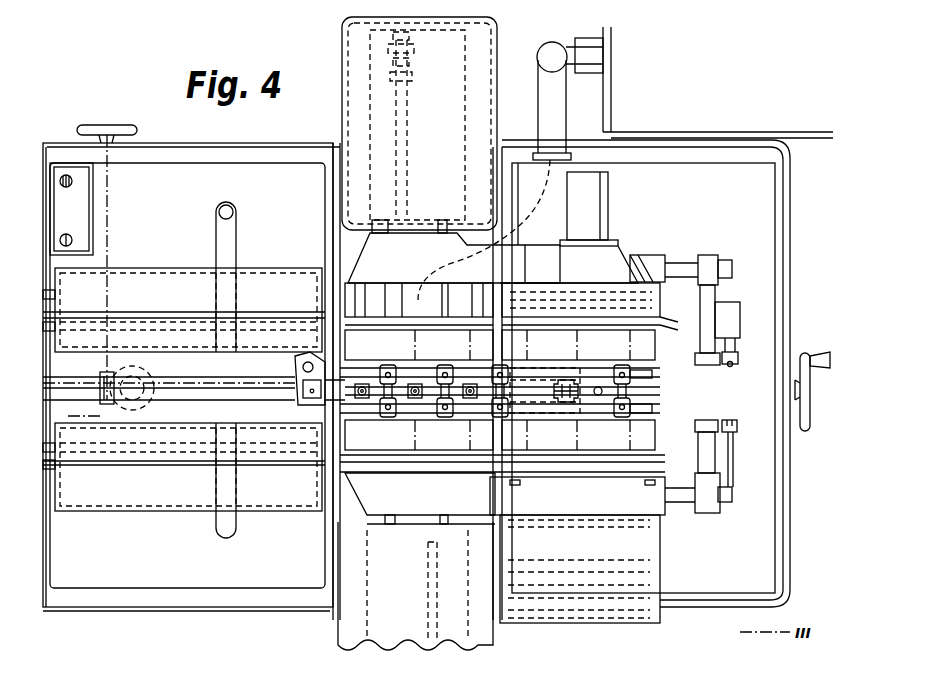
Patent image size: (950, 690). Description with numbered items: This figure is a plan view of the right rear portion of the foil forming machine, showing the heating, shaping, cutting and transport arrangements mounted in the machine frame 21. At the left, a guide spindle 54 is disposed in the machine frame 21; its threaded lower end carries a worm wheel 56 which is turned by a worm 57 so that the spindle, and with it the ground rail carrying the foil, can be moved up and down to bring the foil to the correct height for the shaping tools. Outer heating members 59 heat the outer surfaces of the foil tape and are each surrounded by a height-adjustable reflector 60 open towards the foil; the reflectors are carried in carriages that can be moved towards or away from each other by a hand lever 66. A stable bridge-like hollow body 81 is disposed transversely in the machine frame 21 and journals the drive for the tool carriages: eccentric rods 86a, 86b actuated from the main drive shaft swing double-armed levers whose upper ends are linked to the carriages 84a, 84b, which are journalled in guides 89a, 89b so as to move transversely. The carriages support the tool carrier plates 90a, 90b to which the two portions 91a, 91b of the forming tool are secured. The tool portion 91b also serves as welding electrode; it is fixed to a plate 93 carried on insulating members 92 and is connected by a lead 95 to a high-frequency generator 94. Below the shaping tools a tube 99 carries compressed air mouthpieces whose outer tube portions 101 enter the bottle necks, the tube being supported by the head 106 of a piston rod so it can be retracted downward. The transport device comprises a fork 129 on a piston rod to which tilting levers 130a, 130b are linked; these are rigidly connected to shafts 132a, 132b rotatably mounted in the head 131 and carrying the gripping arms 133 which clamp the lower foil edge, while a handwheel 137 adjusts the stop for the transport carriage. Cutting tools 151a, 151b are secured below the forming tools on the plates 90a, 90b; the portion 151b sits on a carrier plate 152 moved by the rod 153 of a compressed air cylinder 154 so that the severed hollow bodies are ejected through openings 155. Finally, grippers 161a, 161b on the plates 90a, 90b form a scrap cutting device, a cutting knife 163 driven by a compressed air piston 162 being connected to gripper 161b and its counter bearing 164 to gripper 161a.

The machine frame 21 is at (288, 172).
The guide spindle 54 is at (150, 380).
The worm wheel 56 is at (146, 400).
The worm 57 is at (108, 377).
The heating members 59 is at (137, 312).
The reflector 60 is at (143, 283).
The hand lever 66 is at (234, 233).
The bridge-like hollow body 81 is at (342, 516).
The tool supporting carriage 84a is at (410, 520).
The tool supporting carriage 84b is at (465, 213).
The eccentric rod 86a is at (430, 602).
The eccentric rod 86b is at (405, 117).
The guide 89a is at (342, 42).
The guide 89b is at (340, 637).
The tool carrier plate 90a is at (475, 502).
The tool carrier plate 90b is at (532, 262).
The tool portion 91a is at (380, 440).
The tool portion 91b is at (484, 337).
The insulating members 92 is at (365, 292).
The plate 93 is at (419, 345).
The high-frequency generator 94 is at (811, 112).
The conductor or lead 95 is at (543, 195).
The tube 99 is at (404, 398).
The outer tube portions 101 is at (362, 384).
The head 106 is at (303, 398).
The fork 129 is at (581, 419).
The lever 130a is at (567, 405).
The lever 130b is at (568, 378).
The head 131 is at (497, 415).
The shaft 132a is at (651, 409).
The shaft 132b is at (650, 375).
The gripping arms 133 is at (440, 398).
The handwheel 137 is at (805, 358).
The cutting tool portion 151a is at (644, 441).
The cutting tool portion 151b is at (641, 349).
The carrier plate 152 is at (662, 323).
The rod 153 is at (585, 322).
The compressed air cylinder 154 is at (598, 190).
The openings 155 is at (645, 498).
The gripper 161a is at (708, 468).
The gripper 161b is at (708, 294).
The compressed air piston 162 is at (729, 318).
The cutting knife 163 is at (733, 365).
The counter bearing 164 is at (738, 431).